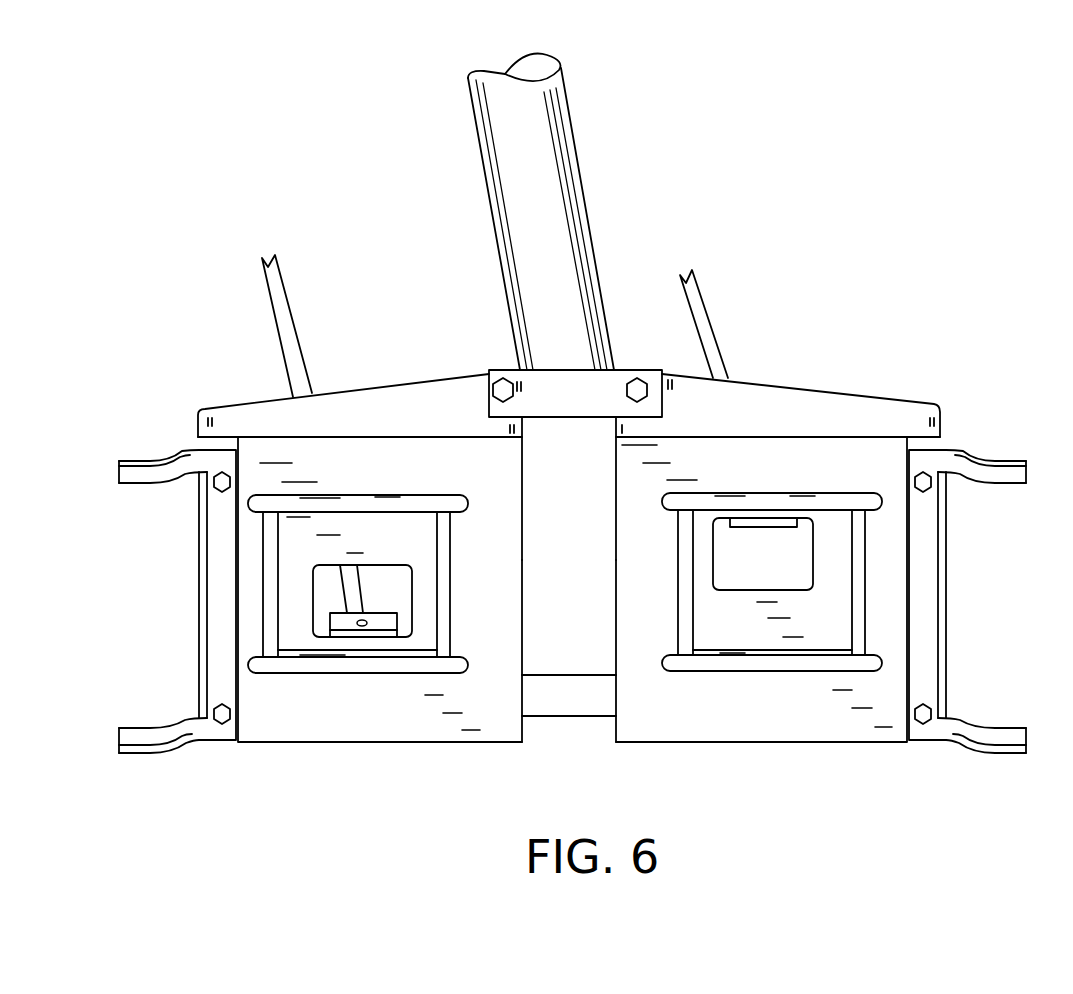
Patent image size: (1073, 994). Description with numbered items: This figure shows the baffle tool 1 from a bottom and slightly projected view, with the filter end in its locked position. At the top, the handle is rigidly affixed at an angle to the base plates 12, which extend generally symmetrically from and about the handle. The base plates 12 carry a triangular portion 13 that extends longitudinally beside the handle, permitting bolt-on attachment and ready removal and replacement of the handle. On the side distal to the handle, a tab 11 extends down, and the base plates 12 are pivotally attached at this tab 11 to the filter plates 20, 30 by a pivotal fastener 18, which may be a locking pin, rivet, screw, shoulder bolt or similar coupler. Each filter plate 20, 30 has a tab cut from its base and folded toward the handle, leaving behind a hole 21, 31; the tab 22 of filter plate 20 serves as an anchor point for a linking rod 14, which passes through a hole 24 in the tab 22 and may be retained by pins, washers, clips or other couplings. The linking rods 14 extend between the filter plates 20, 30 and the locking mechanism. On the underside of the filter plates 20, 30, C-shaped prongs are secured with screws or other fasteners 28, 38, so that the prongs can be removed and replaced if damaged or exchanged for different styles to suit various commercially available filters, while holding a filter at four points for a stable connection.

The baffle tool 1 is at (706, 171).
The tab 11 is at (552, 382).
The base plates 12 is at (580, 637).
The triangular portion 13 is at (571, 490).
The linking rods 14 is at (286, 312).
The pivotal fastener 18 is at (502, 390).
The filter plate 20 is at (194, 670).
The hole 21 is at (322, 583).
The tab 22 is at (347, 620).
The hole 24 is at (362, 630).
The fastener 28 is at (213, 483).
The filter plate 30 is at (951, 637).
The hole 31 is at (785, 573).
The fastener 38 is at (931, 480).